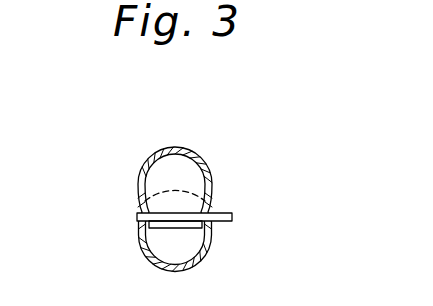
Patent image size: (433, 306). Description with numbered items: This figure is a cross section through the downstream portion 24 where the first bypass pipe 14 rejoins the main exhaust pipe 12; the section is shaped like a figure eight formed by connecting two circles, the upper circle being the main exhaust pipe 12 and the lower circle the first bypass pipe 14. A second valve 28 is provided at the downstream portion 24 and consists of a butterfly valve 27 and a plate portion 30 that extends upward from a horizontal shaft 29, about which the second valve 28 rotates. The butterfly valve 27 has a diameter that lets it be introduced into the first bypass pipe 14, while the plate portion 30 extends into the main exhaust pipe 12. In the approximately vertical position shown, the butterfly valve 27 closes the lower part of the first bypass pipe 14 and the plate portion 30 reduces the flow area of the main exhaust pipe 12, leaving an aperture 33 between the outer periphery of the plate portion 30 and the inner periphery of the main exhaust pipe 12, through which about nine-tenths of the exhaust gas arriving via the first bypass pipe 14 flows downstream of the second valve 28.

The main exhaust pipe 12 is at (180, 149).
The first bypass pipe 14 is at (200, 262).
The downstream portion 24 is at (213, 202).
The butterfly valve 27 is at (160, 238).
The second valve 28 is at (164, 204).
The horizontal shaft 29 is at (226, 222).
The plate portion 30 is at (162, 177).
The aperture 33 is at (204, 164).